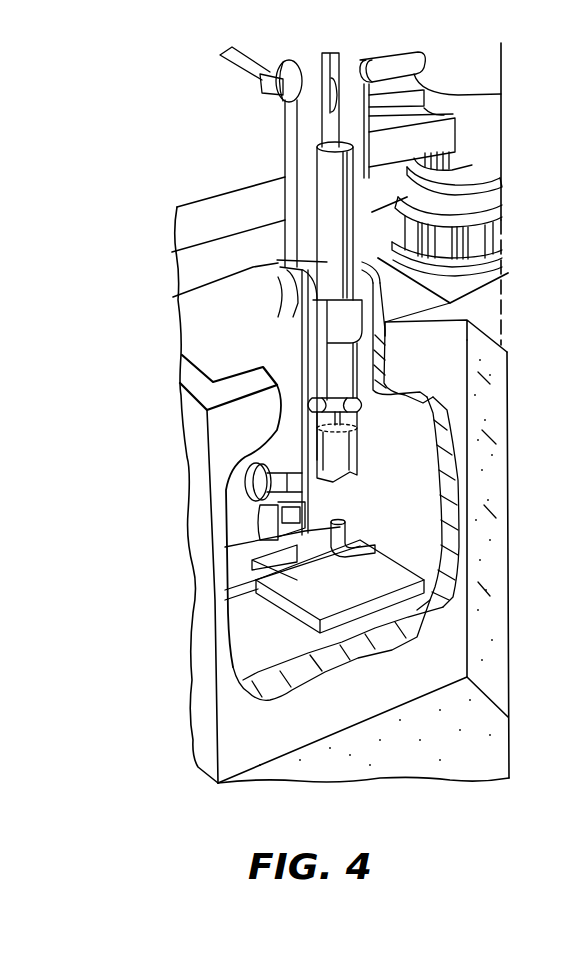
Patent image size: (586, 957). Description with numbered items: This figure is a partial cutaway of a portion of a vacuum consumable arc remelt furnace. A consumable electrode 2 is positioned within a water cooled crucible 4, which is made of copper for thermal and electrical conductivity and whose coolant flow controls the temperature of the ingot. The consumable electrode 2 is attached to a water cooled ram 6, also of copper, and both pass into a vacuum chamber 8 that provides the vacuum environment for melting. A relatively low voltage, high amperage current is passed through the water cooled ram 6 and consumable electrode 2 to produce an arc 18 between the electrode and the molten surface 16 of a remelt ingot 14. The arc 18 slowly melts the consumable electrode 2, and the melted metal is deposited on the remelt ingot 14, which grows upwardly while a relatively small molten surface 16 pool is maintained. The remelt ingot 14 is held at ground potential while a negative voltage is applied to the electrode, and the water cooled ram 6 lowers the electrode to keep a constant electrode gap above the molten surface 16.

The consumable electrode 2 is at (327, 382).
The water cooled crucible 4 is at (336, 480).
The water cooled ram 6 is at (322, 81).
The vacuum chamber 8 is at (315, 128).
The remelt ingot 14 is at (315, 452).
The molten surface 16 is at (330, 400).
The arc 18 is at (333, 398).